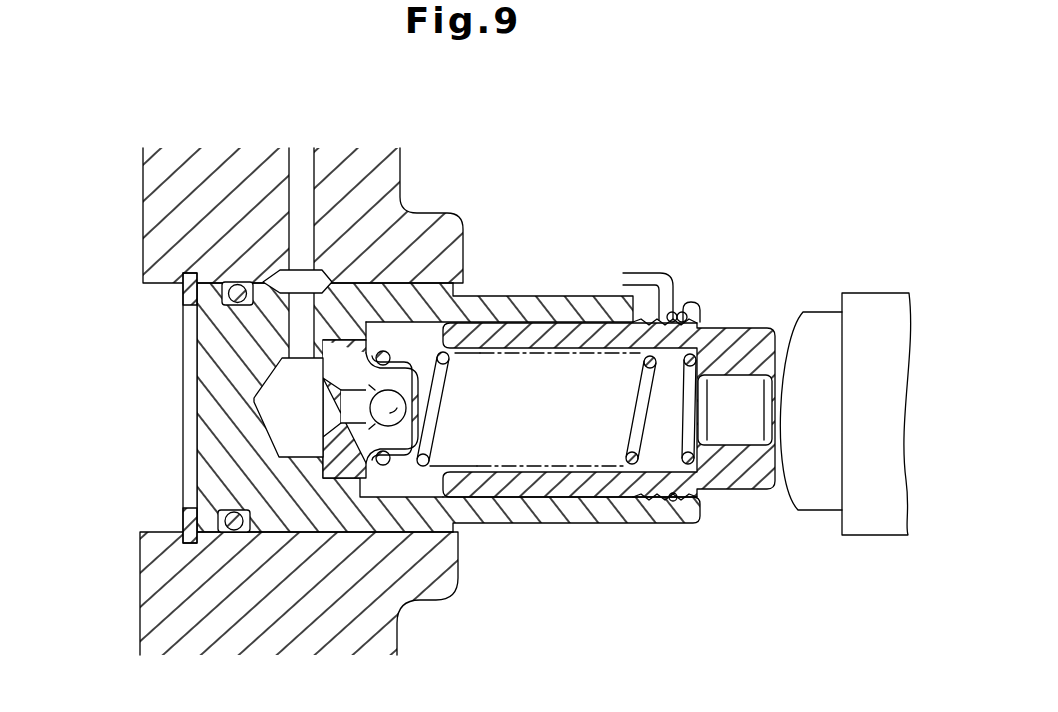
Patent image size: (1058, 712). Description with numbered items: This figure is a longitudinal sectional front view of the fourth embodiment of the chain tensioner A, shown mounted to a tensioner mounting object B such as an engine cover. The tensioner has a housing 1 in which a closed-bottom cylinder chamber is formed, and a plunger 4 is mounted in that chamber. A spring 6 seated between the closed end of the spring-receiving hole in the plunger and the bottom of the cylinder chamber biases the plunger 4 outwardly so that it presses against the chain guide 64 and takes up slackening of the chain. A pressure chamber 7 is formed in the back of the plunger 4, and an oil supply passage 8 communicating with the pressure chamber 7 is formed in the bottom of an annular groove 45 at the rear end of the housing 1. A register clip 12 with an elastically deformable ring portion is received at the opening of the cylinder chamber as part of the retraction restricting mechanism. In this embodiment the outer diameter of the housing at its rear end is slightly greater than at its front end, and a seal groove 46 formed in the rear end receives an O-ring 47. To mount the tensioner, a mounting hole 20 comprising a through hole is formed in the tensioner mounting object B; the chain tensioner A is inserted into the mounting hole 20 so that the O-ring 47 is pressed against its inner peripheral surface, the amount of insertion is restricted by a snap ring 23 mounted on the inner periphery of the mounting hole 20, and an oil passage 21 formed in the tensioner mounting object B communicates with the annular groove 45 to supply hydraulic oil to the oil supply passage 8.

The housing 1 is at (507, 308).
The plunger 4 is at (752, 332).
The spring 6 is at (638, 470).
The pressure chamber 7 is at (424, 484).
The oil supply passage 8 is at (297, 398).
The register clip 12 is at (686, 298).
The mounting hole 20 is at (168, 345).
The oil passage 21 is at (300, 193).
The snap ring 23 is at (180, 520).
The annular groove 45 is at (264, 282).
The seal groove 46 is at (233, 533).
The O-ring 47 is at (223, 533).
The chain guide 64 is at (879, 308).
The chain tensioner A is at (573, 292).
The tensioner mounting object B is at (145, 184).